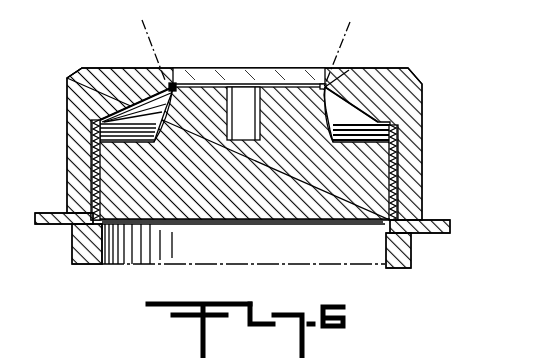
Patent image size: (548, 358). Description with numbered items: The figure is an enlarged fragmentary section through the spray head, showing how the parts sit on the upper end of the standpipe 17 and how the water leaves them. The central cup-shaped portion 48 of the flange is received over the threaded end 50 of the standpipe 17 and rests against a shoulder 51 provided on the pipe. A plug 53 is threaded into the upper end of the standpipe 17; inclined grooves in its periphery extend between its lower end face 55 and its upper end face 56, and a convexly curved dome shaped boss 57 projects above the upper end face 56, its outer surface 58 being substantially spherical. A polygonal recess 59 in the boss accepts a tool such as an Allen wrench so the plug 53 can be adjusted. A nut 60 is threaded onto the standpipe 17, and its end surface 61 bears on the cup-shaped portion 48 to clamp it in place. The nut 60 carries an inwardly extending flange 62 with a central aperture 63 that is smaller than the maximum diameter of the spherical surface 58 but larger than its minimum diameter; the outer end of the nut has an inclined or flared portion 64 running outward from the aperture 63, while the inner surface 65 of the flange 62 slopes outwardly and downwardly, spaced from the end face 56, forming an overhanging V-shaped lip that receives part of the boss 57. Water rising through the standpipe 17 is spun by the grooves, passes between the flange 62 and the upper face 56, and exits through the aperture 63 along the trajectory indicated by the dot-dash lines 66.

The standpipe 17 is at (420, 257).
The cup-shaped portion 48 is at (46, 212).
The threaded end 50 is at (400, 155).
The shoulder 51 is at (76, 238).
The plug 53 is at (297, 226).
The lower end face 55 is at (147, 223).
The upper end face 56 is at (98, 126).
The dome shaped boss 57 is at (286, 82).
The outer surface 58 is at (330, 110).
The polygonal recess 59 is at (233, 86).
The nut 60 is at (426, 84).
The end surface 61 is at (424, 218).
The inwardly extending flange 62 is at (110, 68).
The central aperture 63 is at (174, 80).
The inclined or flared portion 64 is at (306, 78).
The inner surface 65 is at (137, 110).
The dot-dash lines 66 is at (150, 30).